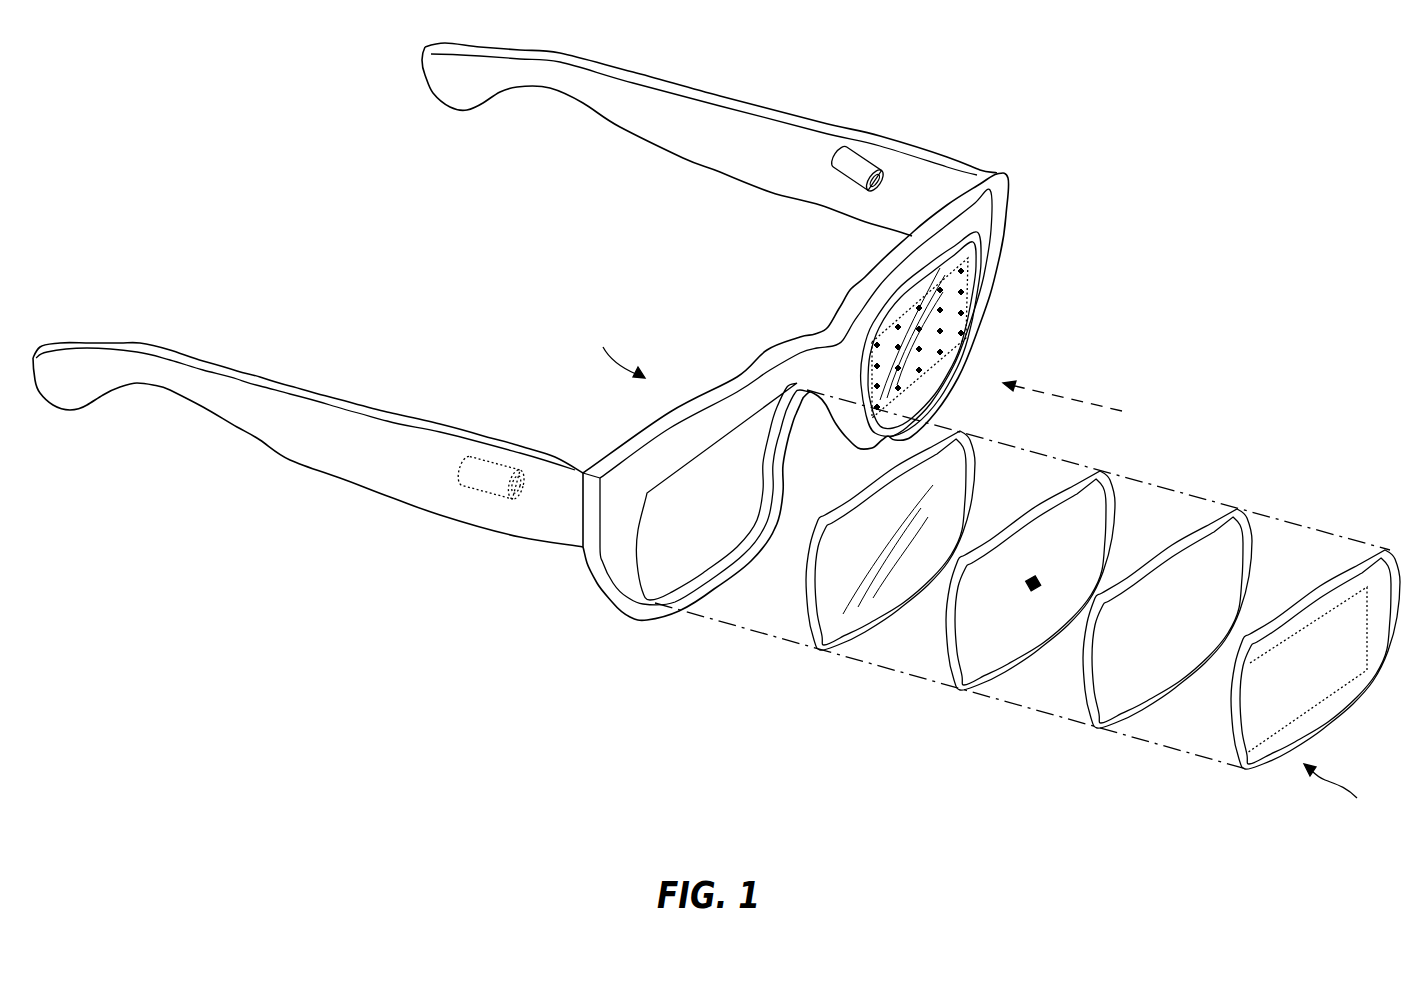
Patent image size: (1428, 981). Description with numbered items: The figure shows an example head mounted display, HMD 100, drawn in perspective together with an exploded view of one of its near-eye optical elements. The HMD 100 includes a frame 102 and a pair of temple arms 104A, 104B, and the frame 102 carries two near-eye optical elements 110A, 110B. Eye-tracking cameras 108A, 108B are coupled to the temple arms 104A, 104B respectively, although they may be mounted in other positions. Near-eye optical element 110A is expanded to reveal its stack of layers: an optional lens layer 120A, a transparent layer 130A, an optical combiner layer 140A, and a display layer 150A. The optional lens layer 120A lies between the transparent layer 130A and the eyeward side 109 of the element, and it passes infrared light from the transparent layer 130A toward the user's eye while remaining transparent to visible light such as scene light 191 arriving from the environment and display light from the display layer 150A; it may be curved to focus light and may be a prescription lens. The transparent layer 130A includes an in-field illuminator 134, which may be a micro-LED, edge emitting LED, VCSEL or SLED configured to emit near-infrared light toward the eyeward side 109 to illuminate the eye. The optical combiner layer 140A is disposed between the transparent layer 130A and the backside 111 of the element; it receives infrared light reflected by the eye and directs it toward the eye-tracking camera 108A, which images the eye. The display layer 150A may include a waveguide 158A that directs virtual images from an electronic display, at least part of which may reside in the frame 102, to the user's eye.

The HMD 100 is at (1225, 152).
The frame 102 is at (838, 380).
The temple arm 104A is at (404, 475).
The temple arm 104B is at (743, 152).
The eye-tracking camera 108A is at (487, 473).
The eye-tracking camera 108B is at (878, 163).
The eyeward side 109 is at (600, 326).
The near-eye optical element 110A is at (1200, 808).
The near-eye optical element 110B is at (962, 325).
The backside 111 is at (1340, 826).
The optional lens layer 120A is at (820, 655).
The transparent layer 130A is at (962, 693).
The in-field illuminator 134 is at (1031, 588).
The optical combiner layer 140A is at (1097, 732).
The display layer 150A is at (1240, 770).
The waveguide 158A is at (1268, 659).
The scene light 191 is at (1101, 411).